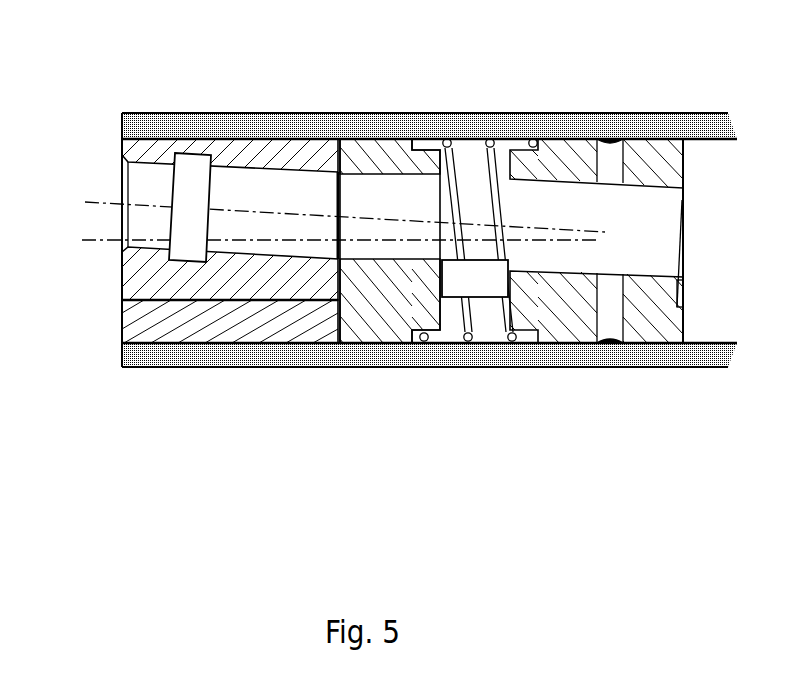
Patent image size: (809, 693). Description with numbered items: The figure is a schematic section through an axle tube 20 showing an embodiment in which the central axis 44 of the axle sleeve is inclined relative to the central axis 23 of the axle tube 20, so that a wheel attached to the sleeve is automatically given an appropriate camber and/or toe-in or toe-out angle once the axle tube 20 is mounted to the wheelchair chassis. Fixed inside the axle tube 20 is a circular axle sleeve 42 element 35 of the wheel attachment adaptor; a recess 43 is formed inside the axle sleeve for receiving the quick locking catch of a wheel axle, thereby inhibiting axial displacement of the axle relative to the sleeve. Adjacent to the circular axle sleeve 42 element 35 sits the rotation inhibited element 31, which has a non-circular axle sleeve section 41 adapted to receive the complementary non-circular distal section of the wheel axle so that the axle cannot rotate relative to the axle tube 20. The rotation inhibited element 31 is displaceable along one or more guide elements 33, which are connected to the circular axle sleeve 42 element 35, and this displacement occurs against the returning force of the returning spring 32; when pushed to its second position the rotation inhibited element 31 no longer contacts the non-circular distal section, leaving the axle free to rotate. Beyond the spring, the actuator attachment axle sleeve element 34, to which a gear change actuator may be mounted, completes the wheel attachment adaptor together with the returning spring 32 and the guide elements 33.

The axle tube 20 is at (553, 123).
The central axis of the axle tube 23 is at (88, 242).
The rotation inhibited element 31 is at (368, 310).
The returning spring 32 is at (467, 340).
The guide element 33 is at (482, 278).
The actuator attachment axle sleeve element 34 is at (568, 305).
The circular axle sleeve element 35 is at (158, 285).
The non-circular axle sleeve section 41 is at (392, 168).
The circular axle sleeve 42 is at (290, 168).
The recess 43 is at (190, 153).
The central axis of the axle sleeve 44 is at (88, 201).